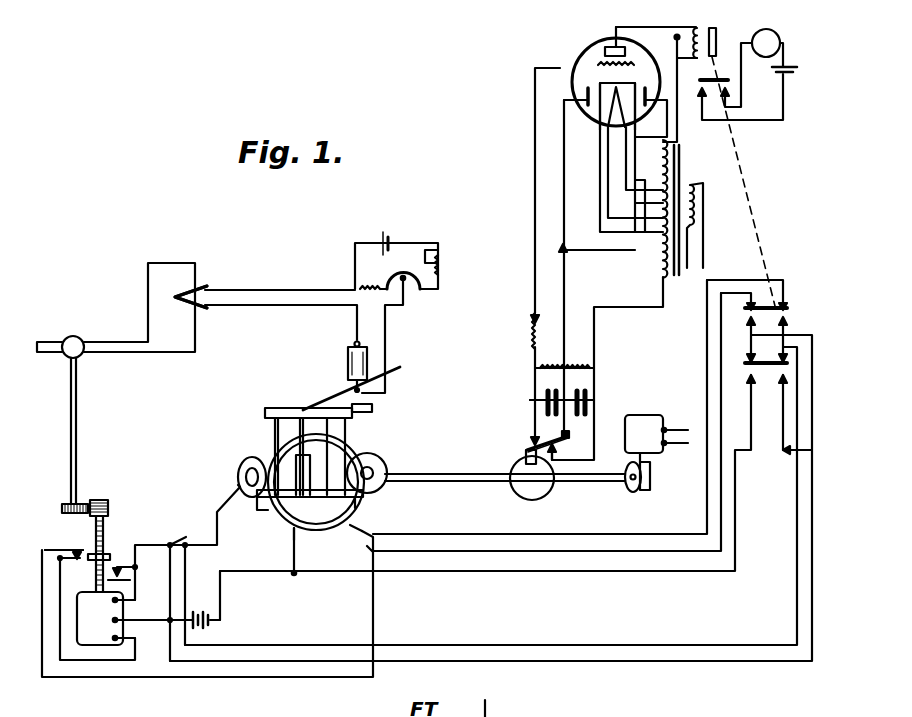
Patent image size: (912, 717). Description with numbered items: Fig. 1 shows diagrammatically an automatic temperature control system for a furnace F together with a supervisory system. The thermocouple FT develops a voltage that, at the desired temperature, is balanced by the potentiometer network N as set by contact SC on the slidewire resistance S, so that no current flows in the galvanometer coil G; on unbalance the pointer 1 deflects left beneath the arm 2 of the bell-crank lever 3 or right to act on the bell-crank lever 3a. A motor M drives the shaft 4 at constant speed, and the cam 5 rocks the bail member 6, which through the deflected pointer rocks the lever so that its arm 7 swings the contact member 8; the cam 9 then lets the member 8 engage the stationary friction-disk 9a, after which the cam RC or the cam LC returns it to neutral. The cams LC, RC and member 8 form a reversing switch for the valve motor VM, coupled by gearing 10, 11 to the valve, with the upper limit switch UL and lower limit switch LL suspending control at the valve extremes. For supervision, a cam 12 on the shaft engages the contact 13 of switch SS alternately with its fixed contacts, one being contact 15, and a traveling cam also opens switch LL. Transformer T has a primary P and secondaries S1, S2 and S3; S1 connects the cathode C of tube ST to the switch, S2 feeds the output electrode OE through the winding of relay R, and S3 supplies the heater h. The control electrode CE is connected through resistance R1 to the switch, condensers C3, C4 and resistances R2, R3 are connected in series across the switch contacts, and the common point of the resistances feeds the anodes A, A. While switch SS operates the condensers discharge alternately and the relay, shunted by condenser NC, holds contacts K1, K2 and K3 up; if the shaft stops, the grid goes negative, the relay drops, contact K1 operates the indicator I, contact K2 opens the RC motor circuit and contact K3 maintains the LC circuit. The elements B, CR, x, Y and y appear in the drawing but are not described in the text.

The tube ST is at (572, 72).
The output electrode OE is at (608, 45).
The control electrode CE is at (598, 63).
The anodes A is at (660, 80).
The cathode C is at (628, 86).
The heater h is at (618, 107).
The condenser NC is at (675, 38).
The relay R is at (716, 31).
The indicator I is at (770, 36).
The contact K1 is at (722, 78).
The secondary S2 is at (660, 165).
The secondary S1 is at (660, 262).
The secondary S3 is at (635, 208).
The transformer T is at (678, 221).
The primary P is at (703, 182).
The contact K2 is at (784, 306).
The contact K3 is at (748, 361).
The resistance R1 is at (532, 332).
The resistance R2 is at (540, 370).
The resistance R3 is at (586, 365).
The connection line x is at (530, 400).
The condenser C3 is at (564, 396).
The condenser C4 is at (588, 394).
The connection Y is at (594, 401).
The motor M is at (641, 425).
The shaft 4 is at (432, 483).
The cam 12 is at (530, 494).
The movable contact 13 is at (526, 451).
The gearing 11 is at (532, 440).
The switch SS is at (532, 446).
The contact 15 is at (557, 459).
The potentiometer network N is at (340, 269).
The battery B is at (390, 240).
The resistor CR is at (441, 263).
The contact SC is at (373, 275).
The slidewire resistance S is at (405, 273).
The galvanometer coil G is at (348, 352).
The bell-crank lever 3a is at (363, 384).
The pointer 1 is at (325, 405).
The arm 2 is at (297, 405).
The bell-crank lever 3 is at (277, 405).
The bail member 6 is at (373, 409).
The cam 5 is at (346, 456).
The cam 9 is at (316, 482).
The arm 7 is at (280, 520).
The friction-disk 9a is at (298, 528).
The contact member 8 is at (330, 522).
The cam LC is at (252, 457).
The cam RC is at (375, 462).
The furnace F is at (150, 282).
The thermocouple FT is at (196, 289).
The joint y is at (79, 337).
The gearing 10 is at (106, 500).
The upper limit switch UL is at (64, 544).
The lower limit switch LL is at (124, 580).
The valve motor VM is at (125, 628).